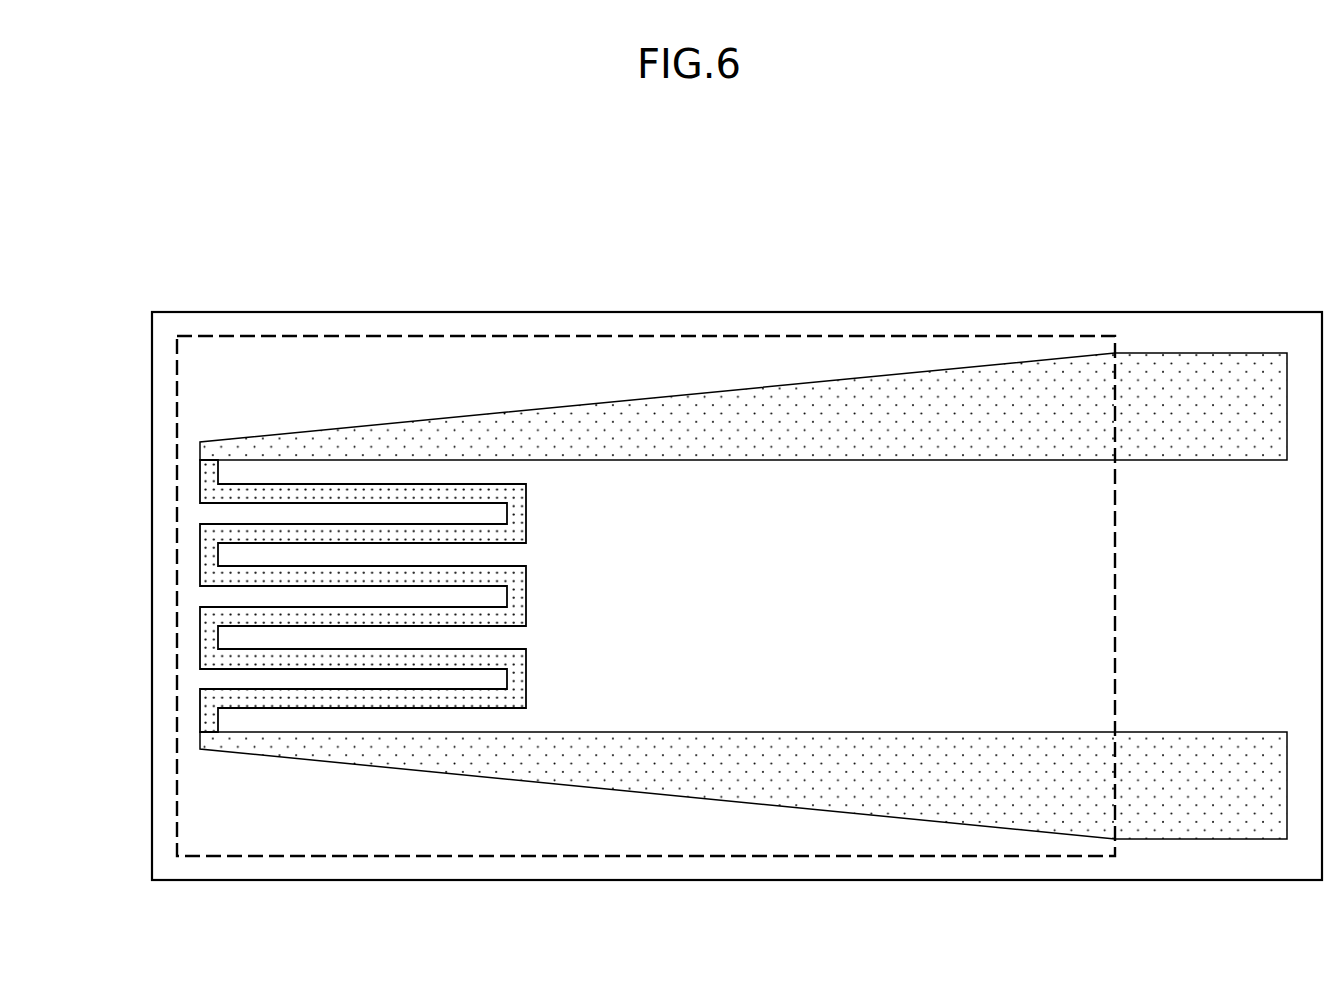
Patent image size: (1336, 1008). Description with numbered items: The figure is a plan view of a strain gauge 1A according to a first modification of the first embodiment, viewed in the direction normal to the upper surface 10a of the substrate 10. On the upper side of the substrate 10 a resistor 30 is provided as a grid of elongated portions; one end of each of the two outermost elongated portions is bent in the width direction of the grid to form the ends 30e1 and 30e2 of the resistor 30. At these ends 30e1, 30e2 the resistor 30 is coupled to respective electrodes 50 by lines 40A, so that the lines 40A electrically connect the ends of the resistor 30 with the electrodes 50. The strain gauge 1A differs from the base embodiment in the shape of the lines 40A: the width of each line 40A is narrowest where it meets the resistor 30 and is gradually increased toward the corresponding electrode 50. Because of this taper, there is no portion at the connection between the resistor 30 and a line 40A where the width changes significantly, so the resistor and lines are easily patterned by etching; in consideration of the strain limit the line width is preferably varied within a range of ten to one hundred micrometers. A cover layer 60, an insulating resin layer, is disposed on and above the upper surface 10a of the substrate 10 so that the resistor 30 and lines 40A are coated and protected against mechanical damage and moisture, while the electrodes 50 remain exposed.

The strain gauge 1A is at (121, 149).
The substrate 10 is at (483, 312).
The upper surface of substrate 10a is at (600, 323).
The resistor 30 is at (366, 484).
The end of resistor 30e1 is at (203, 453).
The end of resistor 30e2 is at (203, 735).
The line 40A is at (892, 364).
The electrode 50 is at (1203, 344).
The cover layer 60 is at (1013, 335).